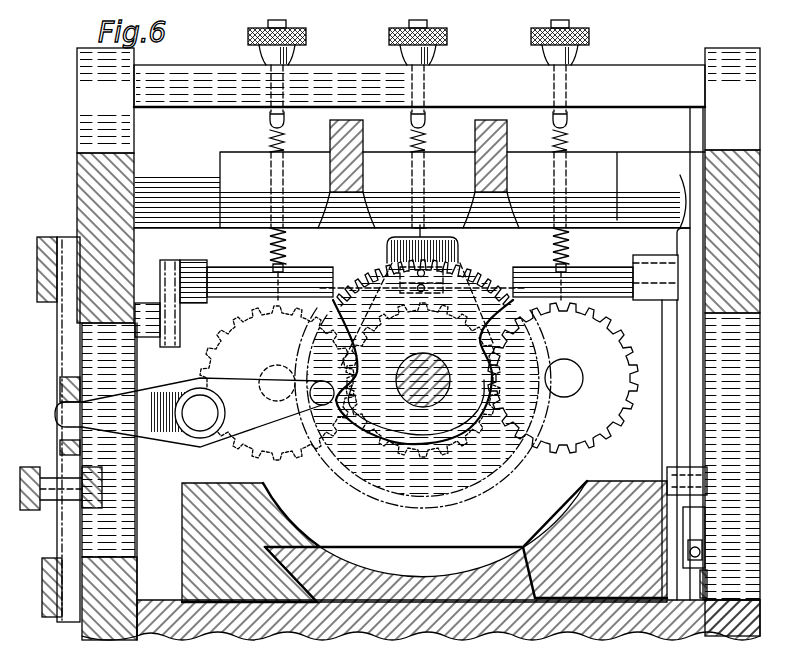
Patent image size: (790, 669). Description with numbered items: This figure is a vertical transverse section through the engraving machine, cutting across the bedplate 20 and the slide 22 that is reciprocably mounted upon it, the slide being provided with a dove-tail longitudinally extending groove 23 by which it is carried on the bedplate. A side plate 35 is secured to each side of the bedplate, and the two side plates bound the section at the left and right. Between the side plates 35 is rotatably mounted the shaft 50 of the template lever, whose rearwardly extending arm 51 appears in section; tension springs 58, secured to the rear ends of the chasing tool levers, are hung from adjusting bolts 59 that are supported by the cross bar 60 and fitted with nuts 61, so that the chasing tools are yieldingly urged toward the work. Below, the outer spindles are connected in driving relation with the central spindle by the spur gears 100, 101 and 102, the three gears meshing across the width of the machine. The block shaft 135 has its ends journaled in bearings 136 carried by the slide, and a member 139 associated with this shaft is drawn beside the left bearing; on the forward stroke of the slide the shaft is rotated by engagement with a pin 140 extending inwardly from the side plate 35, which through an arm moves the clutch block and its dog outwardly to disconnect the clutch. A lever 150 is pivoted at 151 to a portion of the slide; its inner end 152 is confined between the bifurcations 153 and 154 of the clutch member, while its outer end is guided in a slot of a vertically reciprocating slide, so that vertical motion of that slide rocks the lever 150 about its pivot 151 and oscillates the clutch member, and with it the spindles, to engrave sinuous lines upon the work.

The bedplate 20 is at (515, 640).
The slide 22 is at (662, 586).
The dove-tail groove 23 is at (418, 580).
The side plate 35 is at (76, 81).
The shaft 50 is at (182, 172).
The rearwardly extending arm 51 is at (485, 160).
The tension spring 58 is at (270, 247).
The adjusting bolt 59 is at (285, 122).
The cross bar 60 is at (638, 76).
The nut 61 is at (306, 40).
The spur gear 100 is at (604, 449).
The spur gear 101 is at (356, 492).
The spur gear 102 is at (266, 387).
The block shaft 135 is at (318, 273).
The bearing 136 is at (192, 262).
The rod 139 is at (163, 300).
The pin 140 is at (146, 338).
The lever 150 is at (163, 443).
The pivot 151 is at (199, 440).
The inner end of lever 152 is at (375, 367).
The bifurcation 153 is at (300, 457).
The bifurcation 154 is at (380, 300).